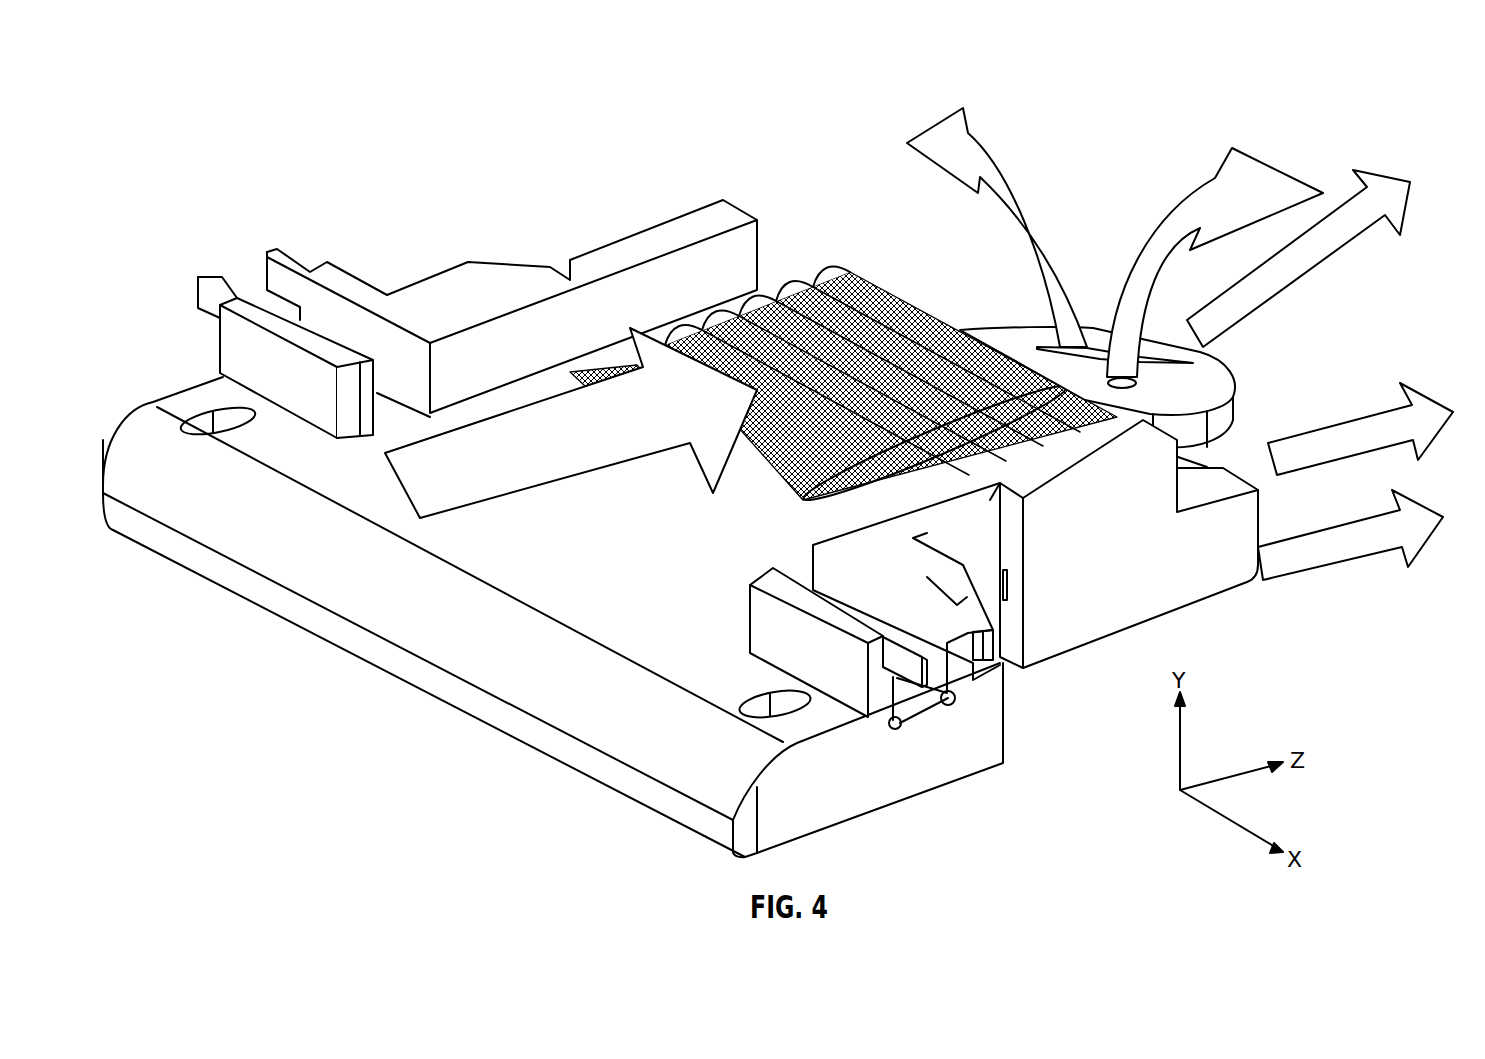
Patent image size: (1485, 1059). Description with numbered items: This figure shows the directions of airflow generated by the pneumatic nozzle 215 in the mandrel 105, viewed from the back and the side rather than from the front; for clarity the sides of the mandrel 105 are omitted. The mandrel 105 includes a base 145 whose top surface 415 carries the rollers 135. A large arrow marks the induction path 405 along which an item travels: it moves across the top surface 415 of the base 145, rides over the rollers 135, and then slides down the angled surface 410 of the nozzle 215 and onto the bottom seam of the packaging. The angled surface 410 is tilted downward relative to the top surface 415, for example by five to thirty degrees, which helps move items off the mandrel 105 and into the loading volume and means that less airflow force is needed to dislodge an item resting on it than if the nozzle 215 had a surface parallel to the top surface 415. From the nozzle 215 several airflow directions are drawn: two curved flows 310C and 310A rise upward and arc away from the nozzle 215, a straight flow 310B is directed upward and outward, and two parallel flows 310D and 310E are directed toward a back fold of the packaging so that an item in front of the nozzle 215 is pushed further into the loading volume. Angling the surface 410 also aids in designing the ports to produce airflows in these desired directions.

The mandrel 105 is at (552, 148).
The rollers 135 is at (803, 500).
The base 145 is at (592, 785).
The pneumatic nozzle 215 is at (960, 330).
The induction path 405 is at (513, 447).
The angled surface 410 is at (1003, 328).
The top surface 415 is at (632, 630).
The airflow direction 310A is at (1247, 150).
The airflow direction 310B is at (1383, 165).
The airflow direction 310C is at (990, 143).
The airflow direction 310D is at (1367, 420).
The airflow direction 310E is at (1348, 540).